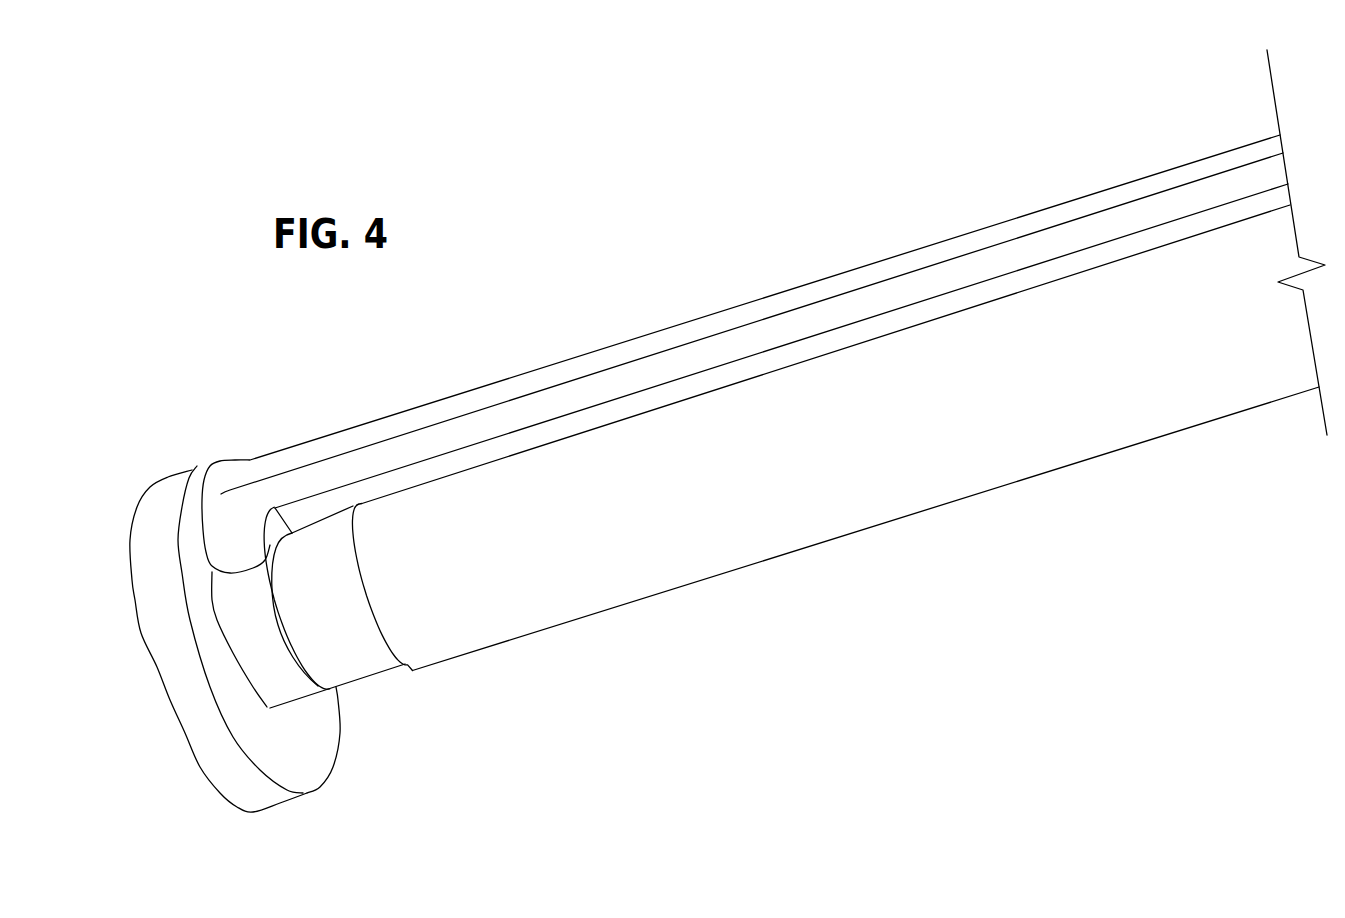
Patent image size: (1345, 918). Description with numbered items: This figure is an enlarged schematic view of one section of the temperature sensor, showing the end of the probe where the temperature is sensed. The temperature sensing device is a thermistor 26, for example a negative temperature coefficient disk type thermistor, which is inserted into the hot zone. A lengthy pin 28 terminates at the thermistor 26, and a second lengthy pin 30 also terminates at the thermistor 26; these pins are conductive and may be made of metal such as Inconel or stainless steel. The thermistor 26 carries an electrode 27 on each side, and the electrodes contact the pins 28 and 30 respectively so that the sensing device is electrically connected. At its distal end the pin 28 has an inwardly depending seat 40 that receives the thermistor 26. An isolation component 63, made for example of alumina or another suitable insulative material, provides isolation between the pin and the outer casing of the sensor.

The isolation component 63 is at (170, 492).
The pin 28 is at (289, 453).
The electrode 27 is at (368, 578).
The pin 30 is at (850, 493).
The thermistor 26 is at (358, 658).
The seat 40 is at (340, 690).